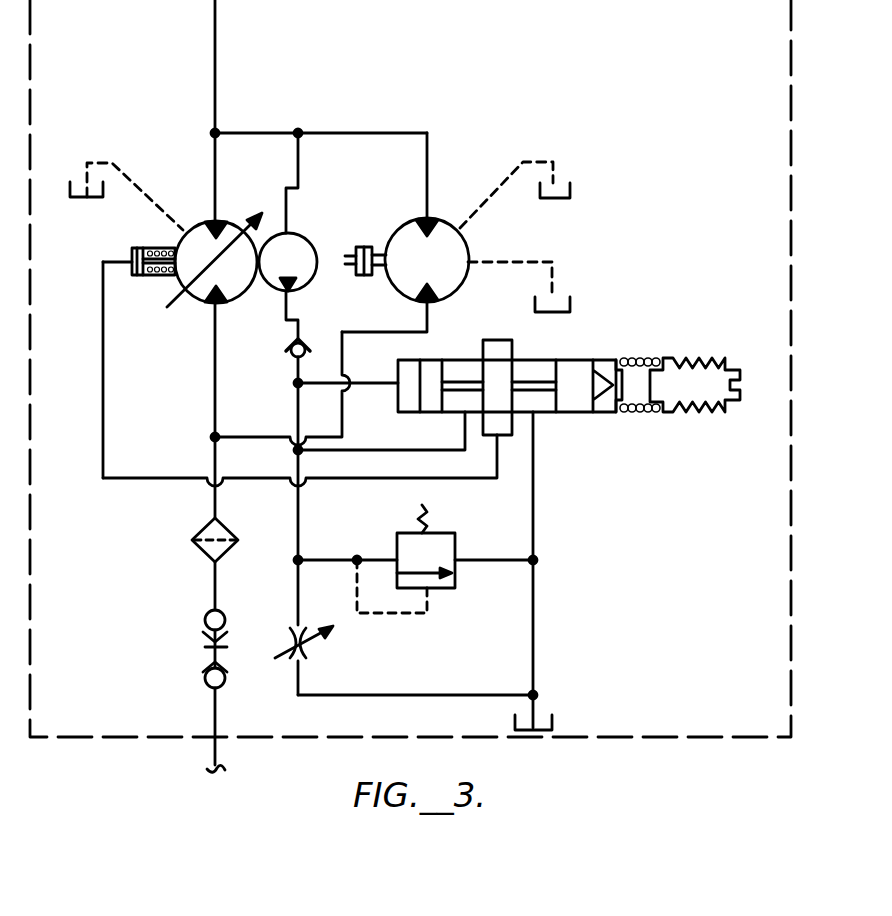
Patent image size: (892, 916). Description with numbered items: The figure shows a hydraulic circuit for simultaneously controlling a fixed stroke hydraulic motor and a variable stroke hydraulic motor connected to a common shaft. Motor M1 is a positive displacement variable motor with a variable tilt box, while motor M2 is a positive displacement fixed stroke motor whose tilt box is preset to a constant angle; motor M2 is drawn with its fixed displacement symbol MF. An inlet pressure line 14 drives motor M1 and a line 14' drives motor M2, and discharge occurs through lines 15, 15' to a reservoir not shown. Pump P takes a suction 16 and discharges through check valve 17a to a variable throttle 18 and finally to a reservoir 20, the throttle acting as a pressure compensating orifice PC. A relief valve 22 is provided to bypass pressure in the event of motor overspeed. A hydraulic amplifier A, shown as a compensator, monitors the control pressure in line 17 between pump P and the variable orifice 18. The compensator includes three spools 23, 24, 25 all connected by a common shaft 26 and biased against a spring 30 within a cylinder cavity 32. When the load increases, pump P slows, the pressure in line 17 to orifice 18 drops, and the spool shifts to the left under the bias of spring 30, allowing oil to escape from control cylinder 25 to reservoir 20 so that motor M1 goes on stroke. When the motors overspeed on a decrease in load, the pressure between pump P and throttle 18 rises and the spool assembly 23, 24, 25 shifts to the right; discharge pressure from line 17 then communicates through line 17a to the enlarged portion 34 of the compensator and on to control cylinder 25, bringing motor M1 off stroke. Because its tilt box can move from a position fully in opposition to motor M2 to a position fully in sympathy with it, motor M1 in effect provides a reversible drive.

The inlet pressure line 14 is at (197, 432).
The inlet pressure line 14' is at (304, 388).
The discharge line 15 is at (236, 110).
The discharge line 15' is at (453, 175).
The suction 16 is at (298, 166).
The control pressure line 17 is at (287, 308).
The check valve 17a is at (287, 348).
The variable throttle 18 is at (293, 665).
The reservoir 20 is at (537, 707).
The relief valve 22 is at (455, 543).
The spool 23 is at (428, 375).
The spool 24 is at (503, 380).
The control cylinder 25 is at (140, 247).
The common shaft 26 is at (450, 383).
The spring 30 is at (643, 363).
The cylinder cavity 32 is at (573, 365).
The enlarged portion 34 is at (497, 437).
The variable motor M1 is at (193, 297).
The fixed stroke motor M2 is at (467, 245).
The fixed displacement motor MF is at (407, 260).
The pump P is at (307, 230).
The pressure compensator PC is at (349, 645).
The hydraulic amplifier A is at (653, 414).